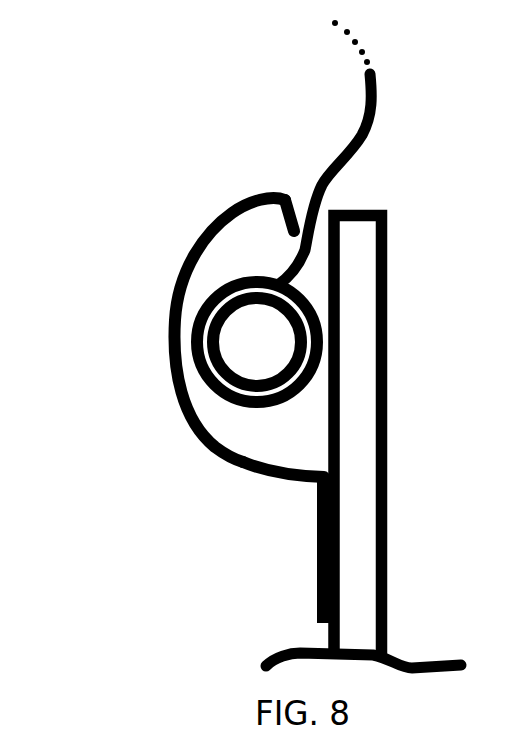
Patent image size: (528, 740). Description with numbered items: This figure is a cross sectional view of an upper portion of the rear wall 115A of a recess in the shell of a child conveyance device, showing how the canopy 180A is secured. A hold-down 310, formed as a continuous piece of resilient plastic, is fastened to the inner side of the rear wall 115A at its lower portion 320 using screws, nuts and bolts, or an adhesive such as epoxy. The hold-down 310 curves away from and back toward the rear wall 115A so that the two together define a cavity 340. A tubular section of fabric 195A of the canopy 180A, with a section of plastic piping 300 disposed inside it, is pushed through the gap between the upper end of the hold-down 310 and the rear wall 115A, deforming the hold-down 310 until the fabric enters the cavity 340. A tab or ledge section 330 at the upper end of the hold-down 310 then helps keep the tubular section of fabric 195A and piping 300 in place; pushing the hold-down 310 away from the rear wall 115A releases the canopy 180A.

The rear wall 115A is at (355, 355).
The canopy 180A is at (370, 133).
The tubular section of fabric 195A is at (226, 280).
The section of plastic piping 300 is at (255, 345).
The hold-down 310 is at (215, 443).
The lower portion 320 is at (317, 523).
The tab or ledge section 330 is at (300, 208).
The cavity 340 is at (298, 445).